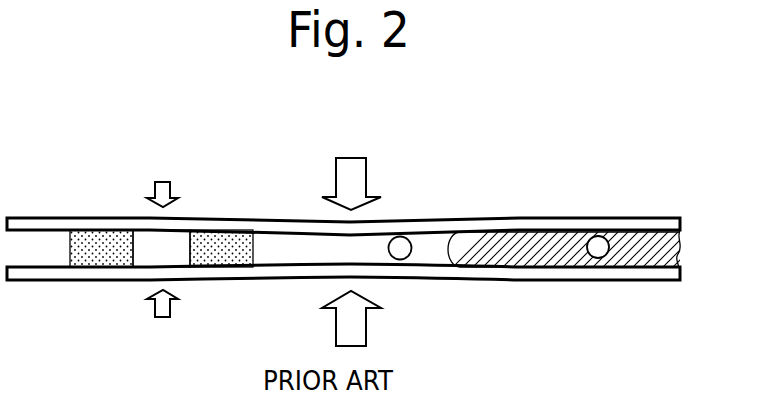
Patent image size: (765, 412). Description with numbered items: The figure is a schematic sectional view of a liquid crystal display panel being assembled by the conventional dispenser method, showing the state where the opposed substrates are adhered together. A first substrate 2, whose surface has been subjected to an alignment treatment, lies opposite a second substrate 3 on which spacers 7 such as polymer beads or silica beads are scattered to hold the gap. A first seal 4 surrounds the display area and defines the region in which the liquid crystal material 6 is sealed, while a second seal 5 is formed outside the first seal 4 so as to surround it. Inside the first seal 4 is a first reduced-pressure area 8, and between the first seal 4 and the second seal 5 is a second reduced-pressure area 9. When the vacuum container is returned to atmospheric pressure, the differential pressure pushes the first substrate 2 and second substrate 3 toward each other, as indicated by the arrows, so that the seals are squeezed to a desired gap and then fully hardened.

The first substrate 2 is at (575, 272).
The second substrate 3 is at (652, 230).
The first seal 4 is at (226, 237).
The second seal 5 is at (97, 242).
The liquid crystal material 6 is at (487, 238).
The spacers 7 is at (597, 240).
The first reduced-pressure area 8 is at (420, 256).
The second reduced-pressure area 9 is at (148, 257).